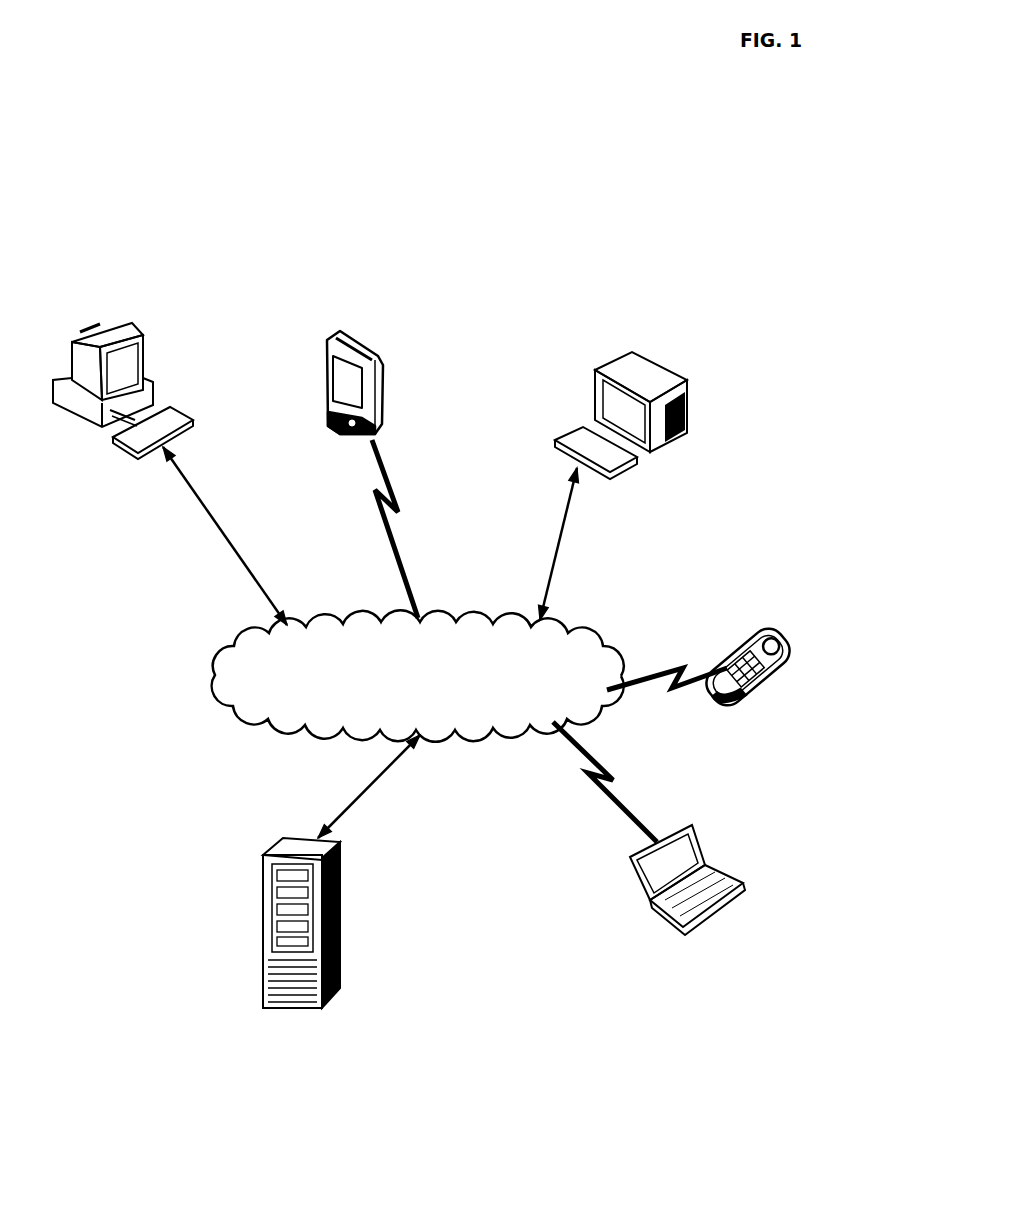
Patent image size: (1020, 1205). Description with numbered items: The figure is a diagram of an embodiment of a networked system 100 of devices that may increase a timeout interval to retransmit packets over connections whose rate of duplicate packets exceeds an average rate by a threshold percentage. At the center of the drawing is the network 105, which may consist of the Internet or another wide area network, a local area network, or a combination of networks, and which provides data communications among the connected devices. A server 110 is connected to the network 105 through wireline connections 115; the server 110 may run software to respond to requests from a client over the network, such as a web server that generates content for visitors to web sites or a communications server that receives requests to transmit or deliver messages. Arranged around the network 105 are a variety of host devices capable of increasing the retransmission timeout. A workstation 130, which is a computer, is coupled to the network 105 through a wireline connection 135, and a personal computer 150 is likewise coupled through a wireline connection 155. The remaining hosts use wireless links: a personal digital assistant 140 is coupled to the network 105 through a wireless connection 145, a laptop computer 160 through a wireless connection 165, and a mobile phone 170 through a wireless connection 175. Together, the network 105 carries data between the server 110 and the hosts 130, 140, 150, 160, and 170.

The networked system 100 is at (505, 198).
The network 105 is at (590, 648).
The server 110 is at (347, 912).
The wireline connections 115 is at (380, 768).
The workstation 130 is at (655, 365).
The wireline connection 135 is at (553, 580).
The personal digital assistant 140 is at (362, 343).
The wireless connection 145 is at (398, 548).
The personal computer 150 is at (135, 330).
The wireline connection 155 is at (225, 533).
The laptop computer 160 is at (720, 877).
The wireless connection 165 is at (600, 795).
The mobile phone 170 is at (767, 627).
The wireless connection 175 is at (645, 678).